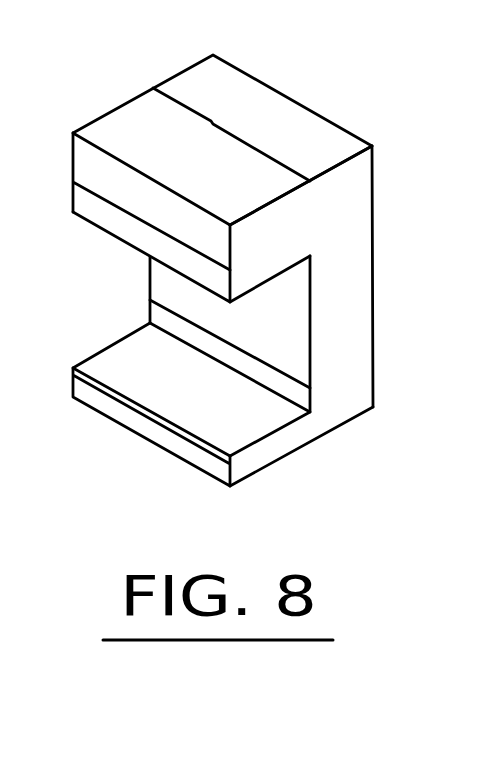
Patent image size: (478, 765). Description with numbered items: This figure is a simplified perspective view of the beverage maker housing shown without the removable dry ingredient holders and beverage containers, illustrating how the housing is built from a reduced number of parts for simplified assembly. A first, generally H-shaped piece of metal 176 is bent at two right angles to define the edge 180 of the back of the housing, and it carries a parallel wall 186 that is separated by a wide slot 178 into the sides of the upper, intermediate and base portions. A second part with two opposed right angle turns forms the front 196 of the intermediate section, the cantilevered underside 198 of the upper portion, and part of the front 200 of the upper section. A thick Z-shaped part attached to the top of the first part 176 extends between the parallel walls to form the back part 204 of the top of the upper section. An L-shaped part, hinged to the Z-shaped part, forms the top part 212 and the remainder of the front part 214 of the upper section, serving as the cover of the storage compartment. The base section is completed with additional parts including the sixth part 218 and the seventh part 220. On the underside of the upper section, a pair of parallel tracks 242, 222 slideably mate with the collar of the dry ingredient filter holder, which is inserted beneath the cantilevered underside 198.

The first part 176 is at (366, 167).
The wide slots 178 is at (312, 340).
The edge 180 is at (377, 373).
The parallel wall 186 is at (327, 223).
The front of the intermediate section 196 is at (275, 330).
The cantilevered underside of the upper portion 198 is at (252, 292).
The front of the upper section 200 is at (133, 230).
The back part of the top of the upper section 204 is at (312, 138).
The top part 212 is at (158, 125).
The front part of the upper section 214 is at (87, 167).
The sixth part 218 is at (127, 412).
The seventh part 220 is at (240, 420).
The parallel track 222 is at (148, 255).
The parallel track 242 is at (252, 292).